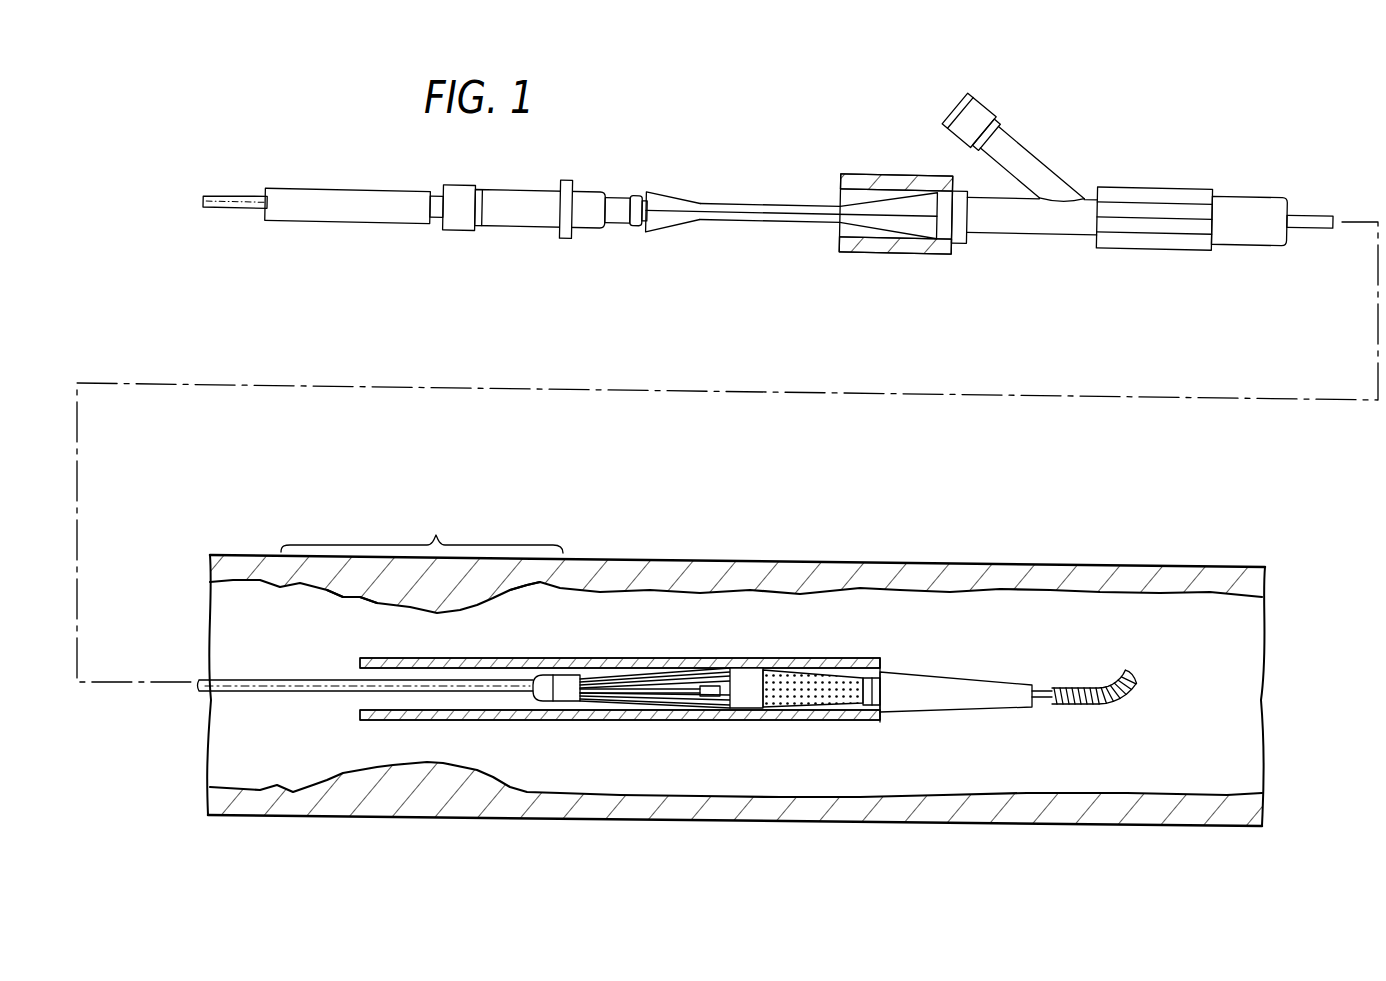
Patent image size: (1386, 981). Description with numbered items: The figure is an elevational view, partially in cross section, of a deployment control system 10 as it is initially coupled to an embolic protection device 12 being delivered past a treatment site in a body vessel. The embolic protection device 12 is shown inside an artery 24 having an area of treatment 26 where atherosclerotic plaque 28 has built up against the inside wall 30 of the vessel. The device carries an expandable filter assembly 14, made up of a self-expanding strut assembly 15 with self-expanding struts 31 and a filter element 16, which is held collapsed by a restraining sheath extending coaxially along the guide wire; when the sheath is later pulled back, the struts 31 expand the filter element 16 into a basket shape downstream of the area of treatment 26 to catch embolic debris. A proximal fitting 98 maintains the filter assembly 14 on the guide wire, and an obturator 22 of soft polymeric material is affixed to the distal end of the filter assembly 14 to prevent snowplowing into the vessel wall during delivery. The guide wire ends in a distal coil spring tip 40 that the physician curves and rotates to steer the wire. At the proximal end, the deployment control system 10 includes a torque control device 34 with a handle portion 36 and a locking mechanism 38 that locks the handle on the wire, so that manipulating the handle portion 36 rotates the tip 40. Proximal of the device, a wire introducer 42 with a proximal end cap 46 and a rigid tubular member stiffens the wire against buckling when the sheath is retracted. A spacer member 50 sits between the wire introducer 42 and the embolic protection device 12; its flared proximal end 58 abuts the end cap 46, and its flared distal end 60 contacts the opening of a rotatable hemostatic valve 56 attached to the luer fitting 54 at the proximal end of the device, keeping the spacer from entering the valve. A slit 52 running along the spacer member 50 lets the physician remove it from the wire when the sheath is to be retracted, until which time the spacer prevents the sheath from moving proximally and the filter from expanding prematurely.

The deployment control system 10 is at (642, 148).
The embolic protection device 12 is at (692, 645).
The expandable filter assembly 14 is at (632, 700).
The self-expanding strut assembly 15 is at (618, 680).
The filter element 16 is at (800, 688).
The obturator 22 is at (953, 690).
The artery 24 is at (943, 572).
The area of treatment 26 is at (422, 523).
The atherosclerotic plaque 28 is at (352, 600).
The inside wall 30 is at (533, 587).
The self-expanding struts 31 is at (685, 700).
The torque control device 34 is at (455, 209).
The handle portion 36 is at (362, 208).
The locking mechanism 38 is at (462, 205).
The distal coil spring tip 40 is at (1113, 702).
The wire introducer 42 is at (630, 246).
The proximal end cap 46 is at (530, 208).
The spacer member 50 is at (745, 204).
The slit 52 is at (669, 224).
The luer fitting 54 is at (1034, 174).
The rotatable hemostatic valve 56 is at (903, 216).
The flared proximal end 58 is at (661, 194).
The flared distal end 60 is at (938, 226).
The proximal fitting 98 is at (550, 694).